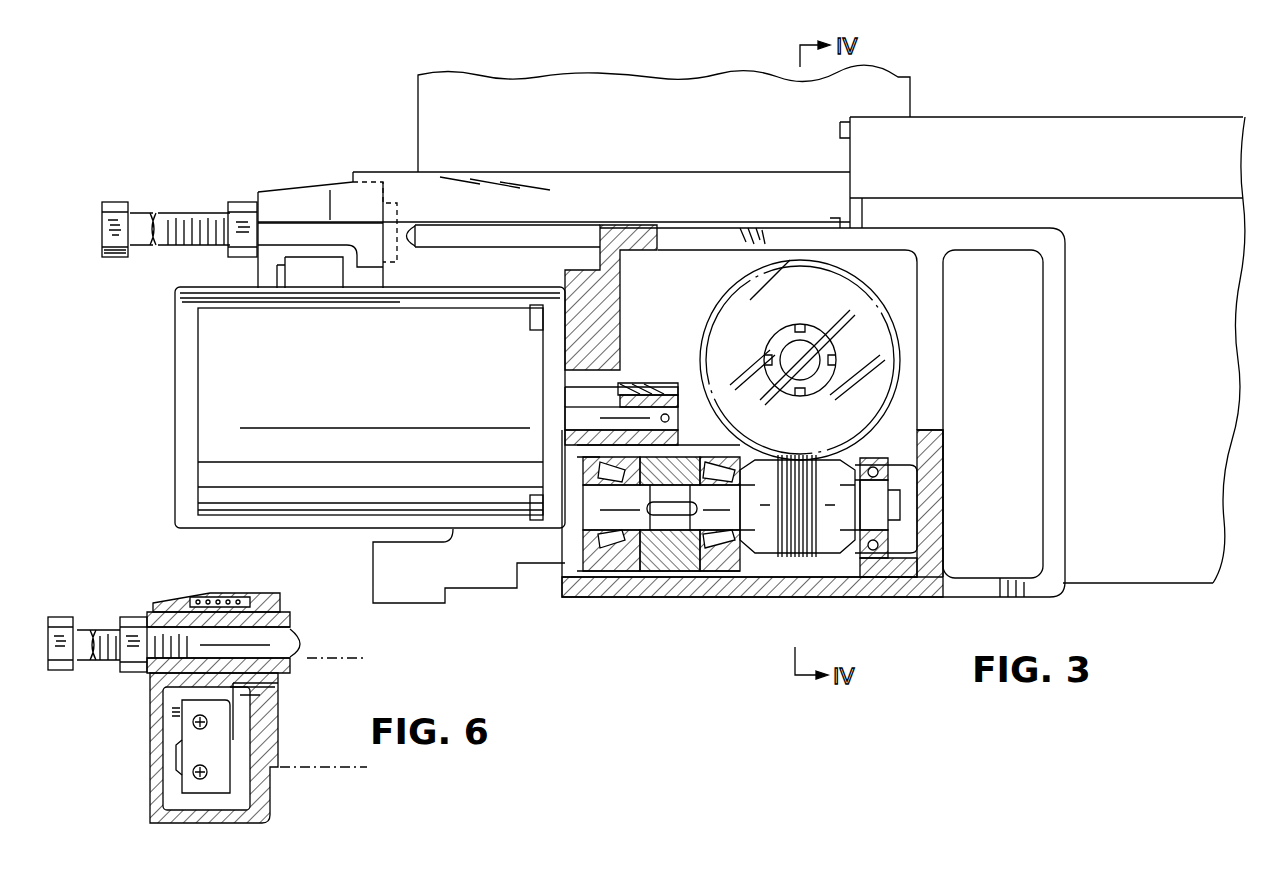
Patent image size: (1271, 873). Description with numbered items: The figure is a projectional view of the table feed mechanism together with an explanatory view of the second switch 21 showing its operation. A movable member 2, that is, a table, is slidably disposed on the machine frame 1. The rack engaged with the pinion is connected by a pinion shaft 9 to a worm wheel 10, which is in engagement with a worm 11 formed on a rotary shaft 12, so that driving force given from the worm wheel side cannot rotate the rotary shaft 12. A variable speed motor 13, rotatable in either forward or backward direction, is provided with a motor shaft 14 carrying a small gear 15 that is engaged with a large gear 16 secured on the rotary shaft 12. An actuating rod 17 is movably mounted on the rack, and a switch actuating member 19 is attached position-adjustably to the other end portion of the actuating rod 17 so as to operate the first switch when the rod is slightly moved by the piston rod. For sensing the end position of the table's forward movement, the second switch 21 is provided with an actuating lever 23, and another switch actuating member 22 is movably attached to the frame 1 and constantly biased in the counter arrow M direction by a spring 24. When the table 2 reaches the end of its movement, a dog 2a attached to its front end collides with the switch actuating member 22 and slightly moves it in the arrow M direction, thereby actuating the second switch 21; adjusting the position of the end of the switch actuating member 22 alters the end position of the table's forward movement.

In FIG. 3, the machine frame 1 is at (1205, 505).
In FIG. 3, the movable member 2 is at (1027, 130).
In FIG. 3, the dog 2a is at (837, 220).
In FIG. 3, the pinion shaft 9 is at (810, 357).
In FIG. 3, the worm wheel 10 is at (732, 315).
In FIG. 3, the worm 11 is at (783, 557).
In FIG. 3, the rotary shaft 12 is at (703, 527).
In FIG. 3, the variable speed motor 13 is at (210, 423).
In FIG. 3, the motor shaft 14 is at (673, 407).
In FIG. 3, the small gear 15 is at (660, 383).
In FIG. 3, the large gear 16 is at (660, 558).
In FIG. 3, the actuating rod 17 is at (277, 273).
In FIG. 3, the switch actuating member 19 is at (295, 267).
In FIG. 6, the second switch 21 is at (193, 757).
In FIG. 3, the switch actuating member 22 is at (413, 237).
In FIG. 6, the switch actuating member 22 is at (310, 640).
In FIG. 6, the actuating lever 23 is at (237, 727).
In FIG. 6, the spring 24 is at (227, 595).